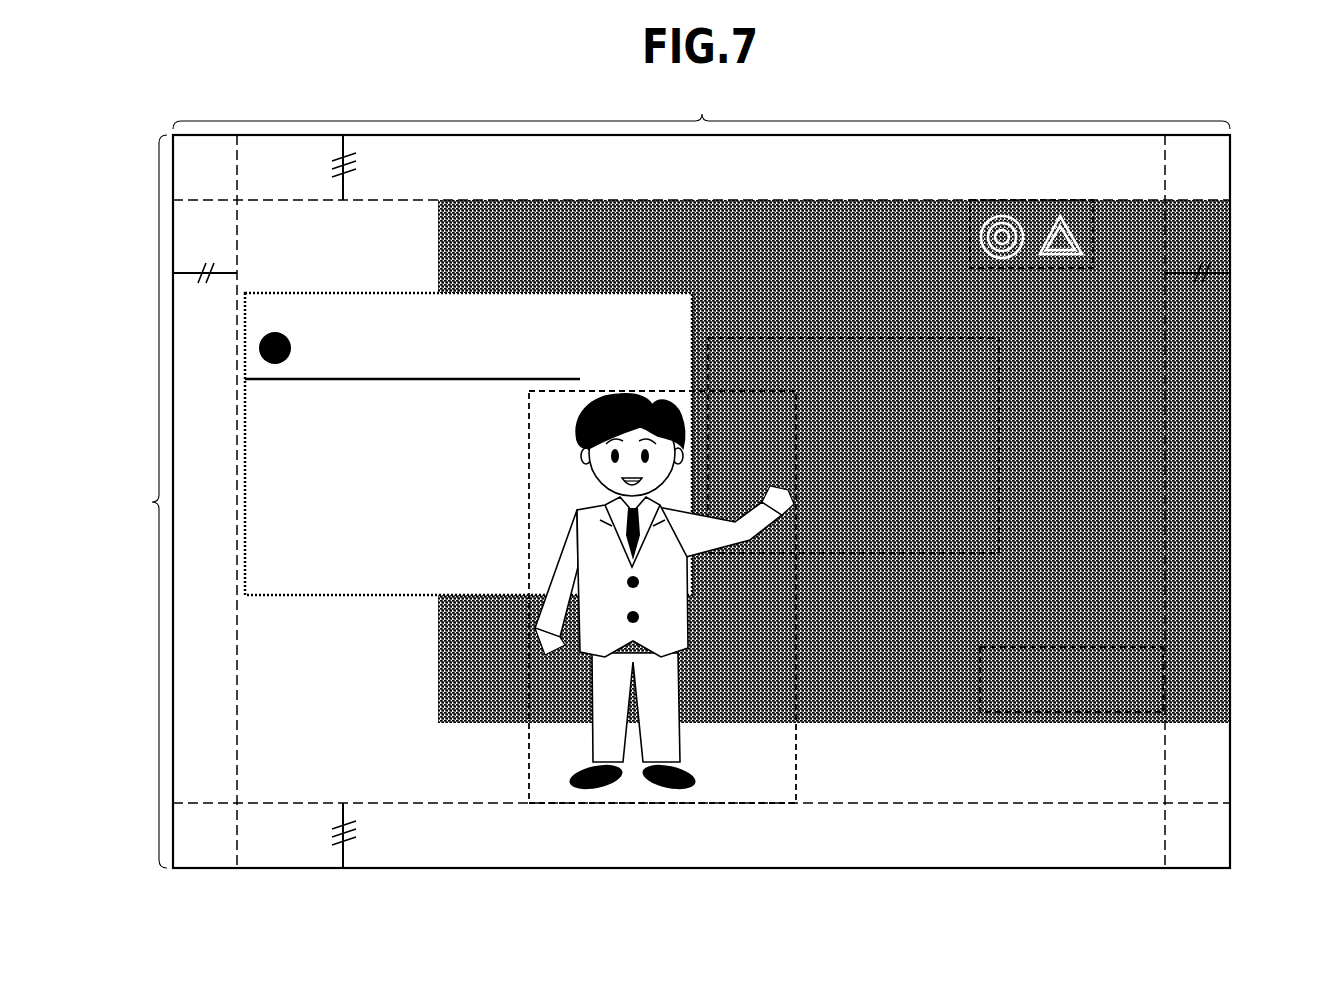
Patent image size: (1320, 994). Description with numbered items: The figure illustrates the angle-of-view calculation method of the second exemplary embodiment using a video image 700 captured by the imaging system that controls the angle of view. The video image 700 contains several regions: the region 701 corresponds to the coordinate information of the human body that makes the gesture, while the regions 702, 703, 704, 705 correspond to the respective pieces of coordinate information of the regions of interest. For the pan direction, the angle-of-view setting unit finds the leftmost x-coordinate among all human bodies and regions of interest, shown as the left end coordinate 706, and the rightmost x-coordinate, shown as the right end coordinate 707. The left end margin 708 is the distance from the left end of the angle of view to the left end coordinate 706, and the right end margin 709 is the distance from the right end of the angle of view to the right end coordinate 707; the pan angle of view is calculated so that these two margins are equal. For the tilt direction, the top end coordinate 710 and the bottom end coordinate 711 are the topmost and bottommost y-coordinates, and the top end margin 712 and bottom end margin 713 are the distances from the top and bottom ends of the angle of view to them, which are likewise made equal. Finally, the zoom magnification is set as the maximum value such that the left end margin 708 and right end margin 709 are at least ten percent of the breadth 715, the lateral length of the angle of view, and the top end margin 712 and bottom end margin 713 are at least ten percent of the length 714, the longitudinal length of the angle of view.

The video image 700 is at (808, 870).
The region 701 is at (797, 748).
The region 702 is at (345, 597).
The region 703 is at (908, 555).
The region 704 is at (1058, 713).
The region 705 is at (970, 237).
The left end coordinate 706 is at (237, 345).
The right end coordinate 707 is at (1166, 328).
The left end margin 708 is at (188, 272).
The right end margin 709 is at (1218, 268).
The top end coordinate 710 is at (434, 199).
The bottom end coordinate 711 is at (427, 805).
The top end margin 712 is at (343, 188).
The bottom end margin 713 is at (343, 858).
The length 714 is at (135, 501).
The breadth 715 is at (701, 108).